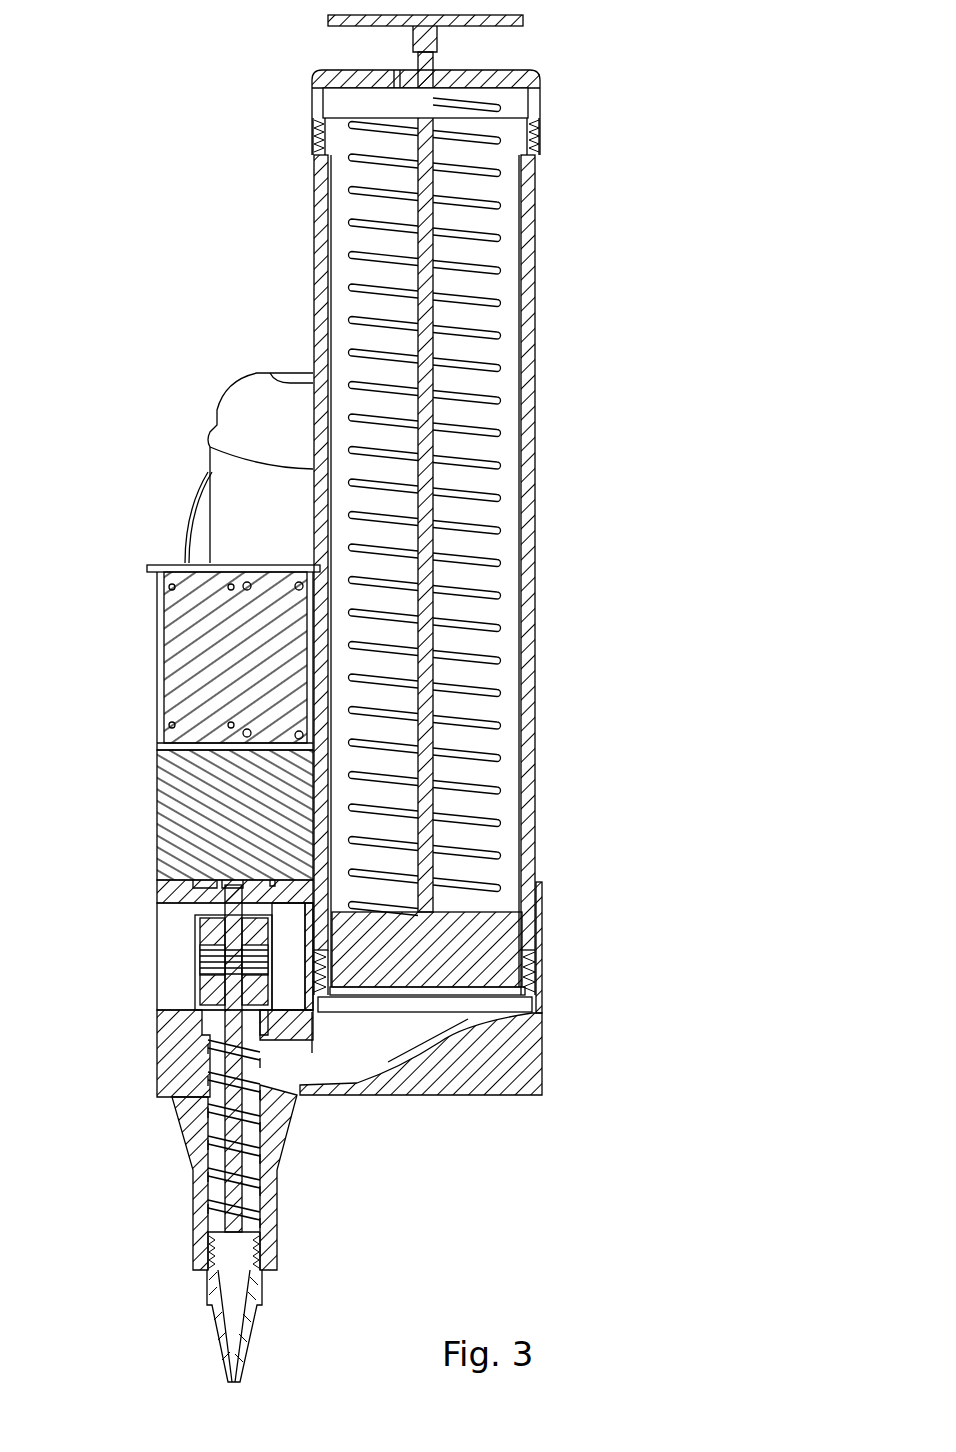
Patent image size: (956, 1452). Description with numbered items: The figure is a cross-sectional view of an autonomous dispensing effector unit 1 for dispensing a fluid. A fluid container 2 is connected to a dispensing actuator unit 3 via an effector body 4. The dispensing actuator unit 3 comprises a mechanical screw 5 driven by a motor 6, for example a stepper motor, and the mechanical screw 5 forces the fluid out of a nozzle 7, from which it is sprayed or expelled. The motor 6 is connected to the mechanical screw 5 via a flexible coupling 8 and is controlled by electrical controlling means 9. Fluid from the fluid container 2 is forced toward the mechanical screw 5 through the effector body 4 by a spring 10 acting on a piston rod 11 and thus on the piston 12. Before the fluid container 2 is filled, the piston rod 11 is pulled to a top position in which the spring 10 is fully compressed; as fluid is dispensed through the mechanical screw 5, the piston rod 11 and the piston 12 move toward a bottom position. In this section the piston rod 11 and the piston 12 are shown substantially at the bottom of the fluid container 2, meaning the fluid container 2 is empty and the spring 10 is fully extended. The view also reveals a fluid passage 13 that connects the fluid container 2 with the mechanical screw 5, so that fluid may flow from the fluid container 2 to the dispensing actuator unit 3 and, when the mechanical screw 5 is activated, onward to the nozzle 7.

The autonomous dispensing effector unit 1 is at (627, 124).
The fluid container 2 is at (522, 490).
The dispensing actuator unit 3 is at (180, 1022).
The effector body 4 is at (514, 1078).
The mechanical screw 5 is at (207, 1130).
The motor 6 is at (195, 805).
The nozzle 7 is at (233, 1310).
The flexible coupling 8 is at (200, 950).
The electrical controlling means 9 is at (200, 625).
The spring 10 is at (456, 397).
The piston rod 11 is at (422, 288).
The piston 12 is at (466, 946).
The fluid passage 13 is at (341, 1052).